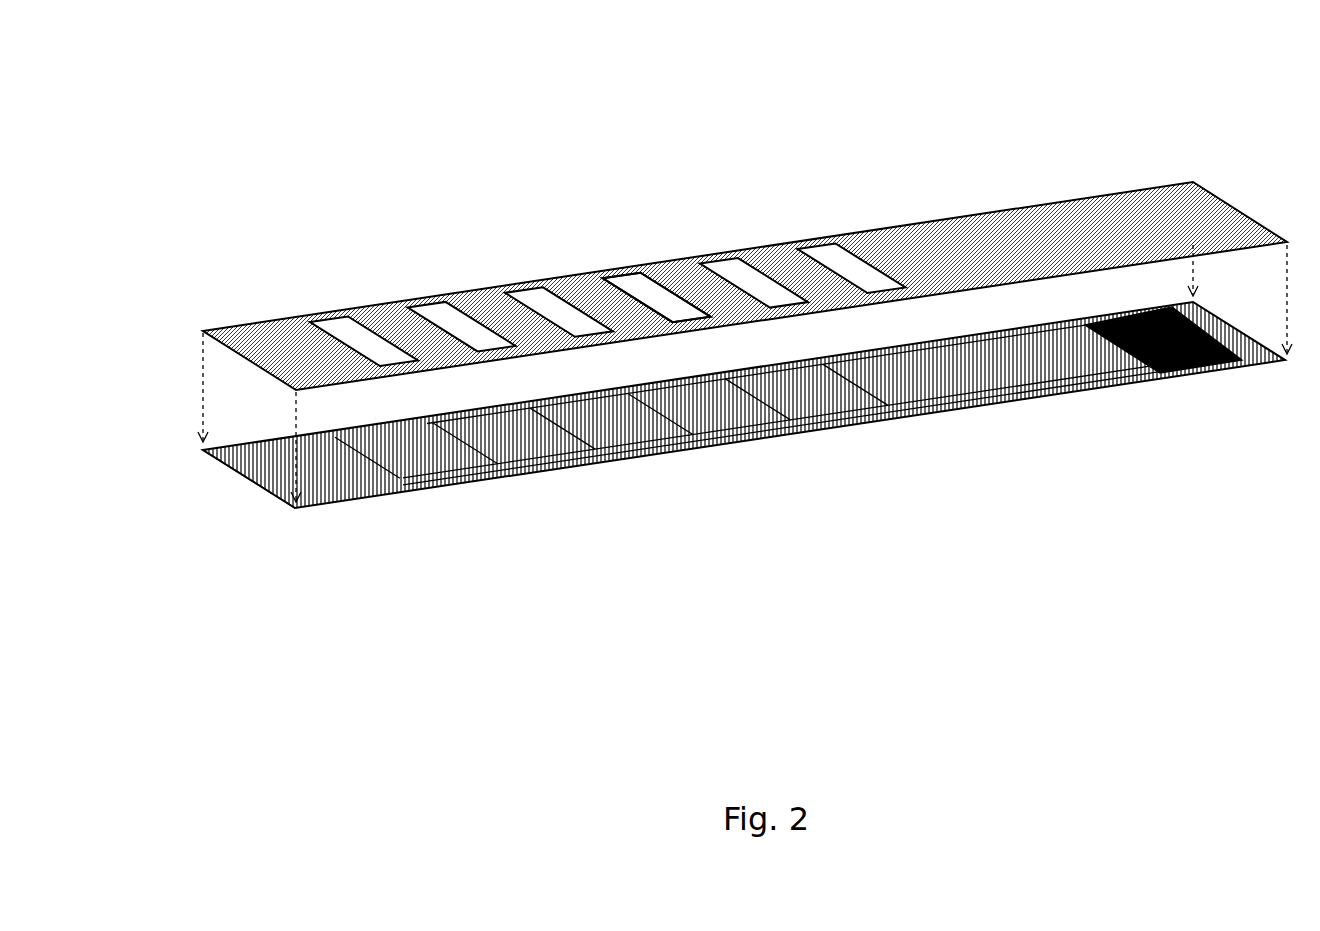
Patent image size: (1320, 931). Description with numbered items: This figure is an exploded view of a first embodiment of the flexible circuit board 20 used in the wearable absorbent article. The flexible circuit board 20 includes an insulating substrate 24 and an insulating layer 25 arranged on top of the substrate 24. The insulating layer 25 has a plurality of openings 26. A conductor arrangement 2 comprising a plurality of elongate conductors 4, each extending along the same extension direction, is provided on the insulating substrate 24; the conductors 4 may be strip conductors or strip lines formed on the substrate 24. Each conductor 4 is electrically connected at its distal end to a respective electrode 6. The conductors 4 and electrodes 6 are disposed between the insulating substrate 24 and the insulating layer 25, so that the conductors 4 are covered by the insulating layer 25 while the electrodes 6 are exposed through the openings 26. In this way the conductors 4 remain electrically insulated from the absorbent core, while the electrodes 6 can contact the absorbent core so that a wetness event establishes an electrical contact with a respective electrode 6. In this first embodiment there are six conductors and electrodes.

The flexible circuit board 20 is at (1068, 158).
The insulating layer 25 is at (297, 362).
The openings 26 is at (648, 292).
The conductor arrangement 2 is at (914, 372).
The insulating substrate 24 is at (270, 470).
The electrode 6 is at (640, 410).
The conductors 4 is at (812, 368).